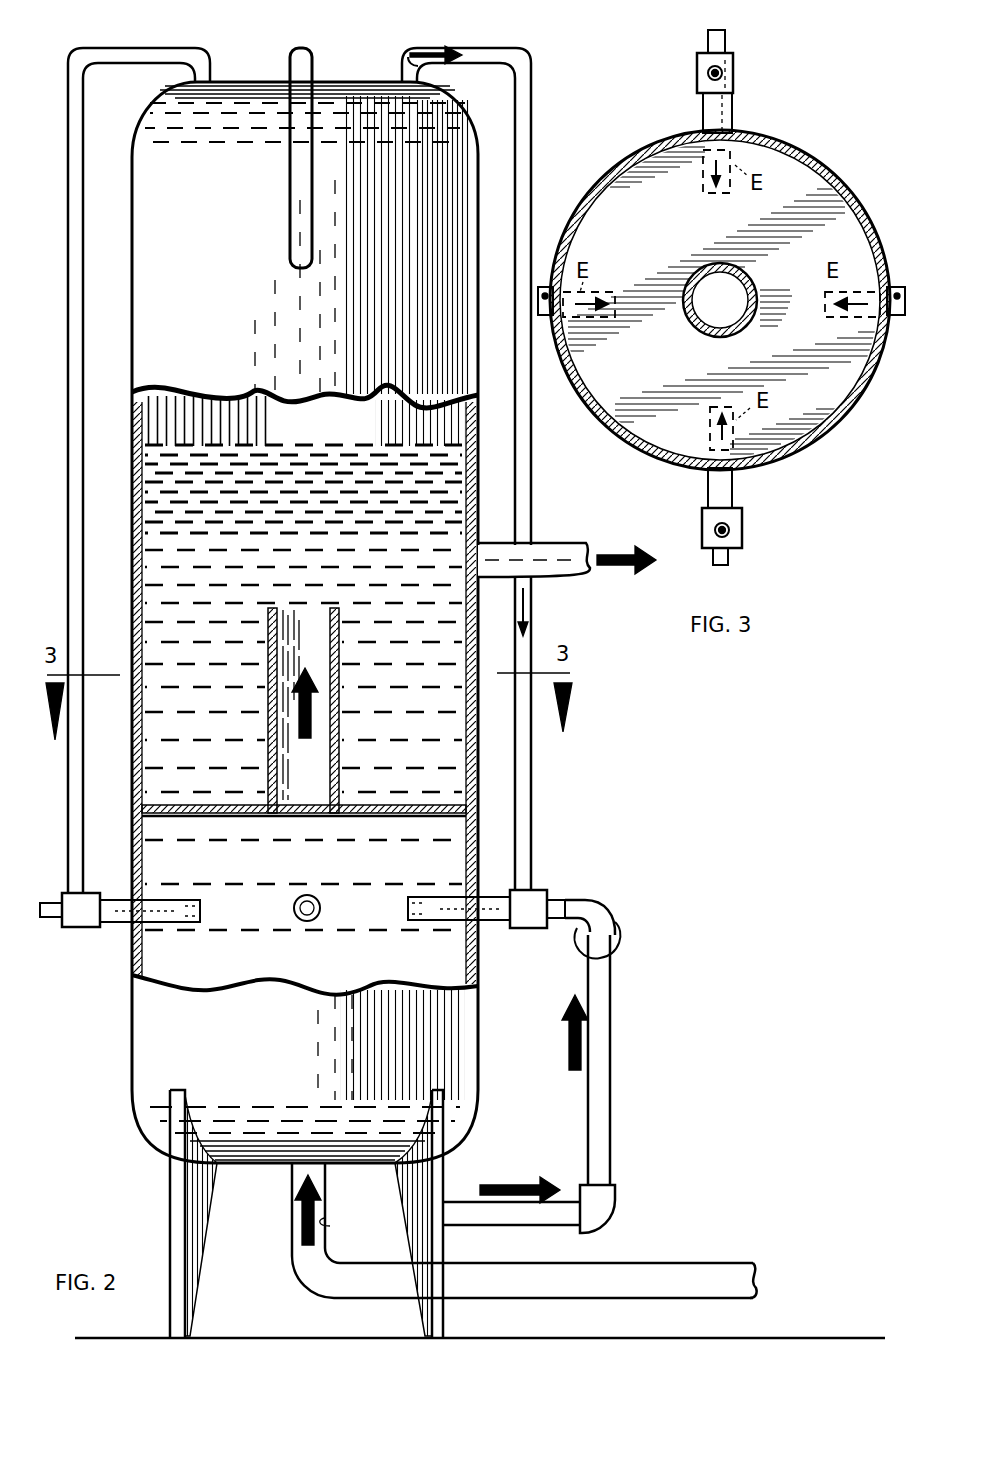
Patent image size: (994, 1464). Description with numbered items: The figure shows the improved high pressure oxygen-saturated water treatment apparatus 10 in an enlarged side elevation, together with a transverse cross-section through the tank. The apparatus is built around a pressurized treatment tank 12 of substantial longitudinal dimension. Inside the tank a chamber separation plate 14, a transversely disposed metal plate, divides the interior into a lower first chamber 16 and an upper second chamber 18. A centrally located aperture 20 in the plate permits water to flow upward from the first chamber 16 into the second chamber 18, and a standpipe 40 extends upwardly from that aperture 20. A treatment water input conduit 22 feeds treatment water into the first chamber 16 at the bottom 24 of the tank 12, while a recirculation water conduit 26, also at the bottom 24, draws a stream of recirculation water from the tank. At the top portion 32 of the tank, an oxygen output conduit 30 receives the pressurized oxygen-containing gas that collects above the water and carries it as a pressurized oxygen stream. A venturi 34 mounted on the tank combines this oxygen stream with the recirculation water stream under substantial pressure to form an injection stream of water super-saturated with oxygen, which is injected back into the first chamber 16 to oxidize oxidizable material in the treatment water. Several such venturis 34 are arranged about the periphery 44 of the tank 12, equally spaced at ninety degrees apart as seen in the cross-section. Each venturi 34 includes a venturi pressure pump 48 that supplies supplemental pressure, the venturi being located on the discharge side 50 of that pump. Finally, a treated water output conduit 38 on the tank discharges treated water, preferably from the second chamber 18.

In FIG. 2, the high pressure oxygen-saturated water treatment apparatus 10 is at (545, 518).
In FIG. 2, the pressurized treatment tank 12 is at (480, 190).
In FIG. 3, the pressurized treatment tank 12 is at (834, 170).
In FIG. 2, the chamber separation plate 14 is at (402, 805).
In FIG. 3, the chamber separation plate 14 is at (724, 367).
In FIG. 2, the first chamber 16 is at (239, 866).
In FIG. 2, the second chamber 18 is at (218, 684).
In FIG. 2, the aperture 20 is at (343, 800).
In FIG. 2, the treatment water input conduit 22 is at (660, 1276).
In FIG. 2, the bottom 24 is at (250, 1168).
In FIG. 2, the recirculation water conduit 26 is at (612, 1072).
In FIG. 2, the oxygen output conduit 30 is at (526, 105).
In FIG. 2, the top portion 32 is at (336, 82).
In FIG. 2, the venturi 34 is at (103, 932).
In FIG. 3, the venturi 34 is at (758, 62).
In FIG. 2, the treated water output conduit 38 is at (562, 545).
In FIG. 2, the standpipe 40 is at (340, 626).
In FIG. 3, the standpipe 40 is at (745, 282).
In FIG. 2, the periphery 44 is at (132, 812).
In FIG. 3, the periphery 44 is at (836, 432).
In FIG. 2, the venturi pressure pump 48 is at (615, 920).
In FIG. 2, the discharge side 50 is at (560, 894).